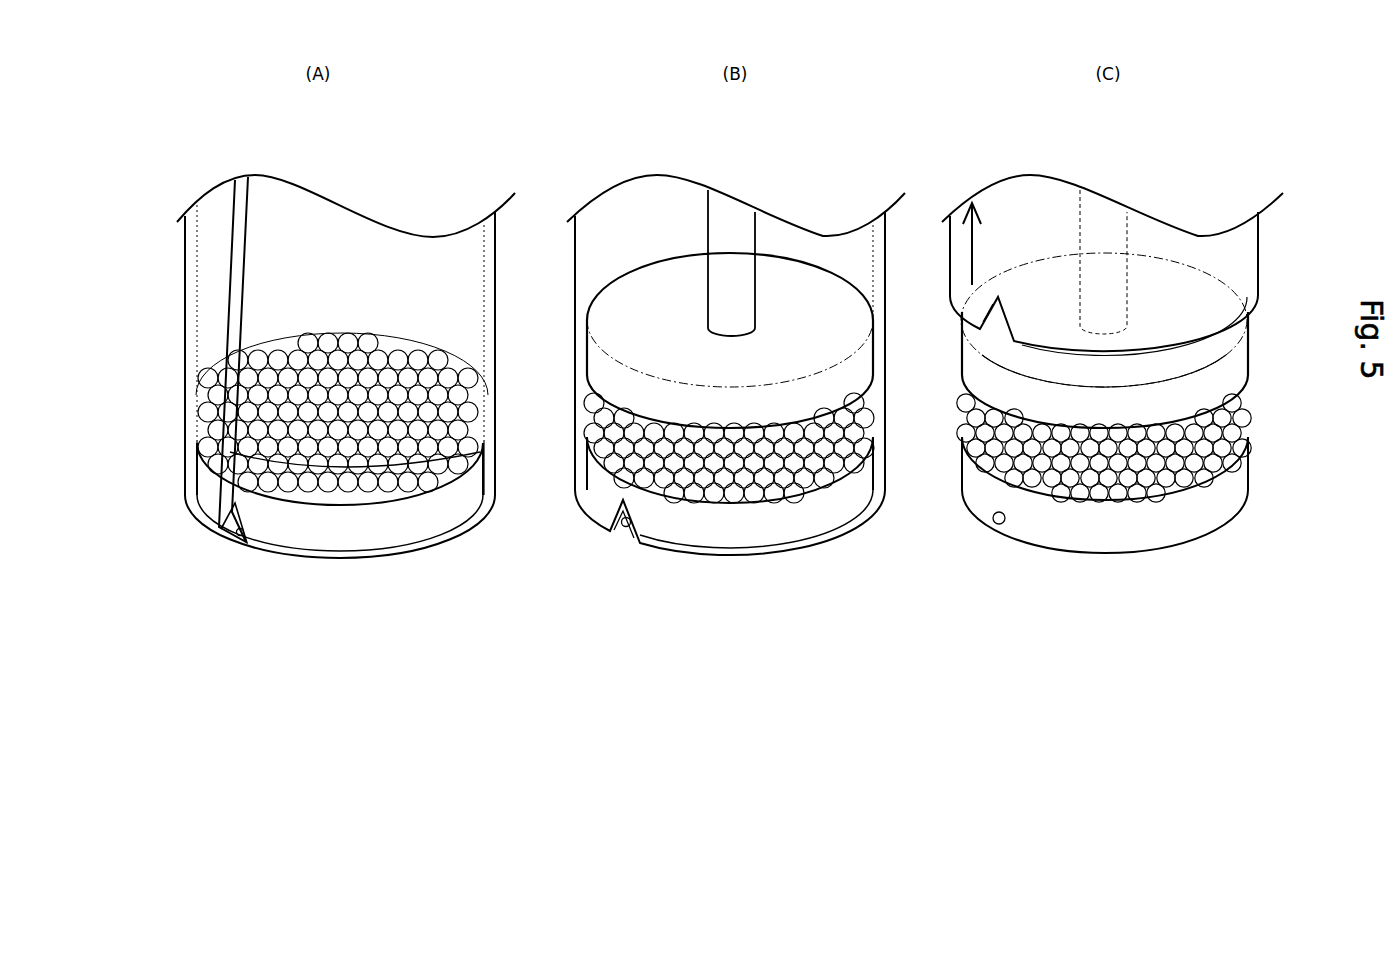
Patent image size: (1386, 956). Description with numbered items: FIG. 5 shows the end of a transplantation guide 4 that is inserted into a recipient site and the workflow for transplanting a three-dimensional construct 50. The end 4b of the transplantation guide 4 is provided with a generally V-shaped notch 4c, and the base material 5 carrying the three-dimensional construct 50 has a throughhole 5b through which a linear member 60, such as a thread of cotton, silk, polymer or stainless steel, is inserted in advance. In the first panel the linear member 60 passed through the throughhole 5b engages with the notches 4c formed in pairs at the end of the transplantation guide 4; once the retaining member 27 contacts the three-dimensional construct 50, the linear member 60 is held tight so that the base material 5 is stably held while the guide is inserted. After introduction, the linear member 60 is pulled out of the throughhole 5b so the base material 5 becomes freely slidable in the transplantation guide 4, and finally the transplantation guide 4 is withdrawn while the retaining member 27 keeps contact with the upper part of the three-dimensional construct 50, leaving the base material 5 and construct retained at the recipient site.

The transplantation guide 4 is at (496, 255).
The end of the transplantation guide 4b is at (390, 560).
The notch 4c is at (258, 535).
The base material 5 is at (341, 548).
The throughhole 5b is at (241, 537).
The retaining member 27 is at (638, 388).
The three-dimensional construct 50 is at (437, 476).
The linear member 60 is at (222, 532).